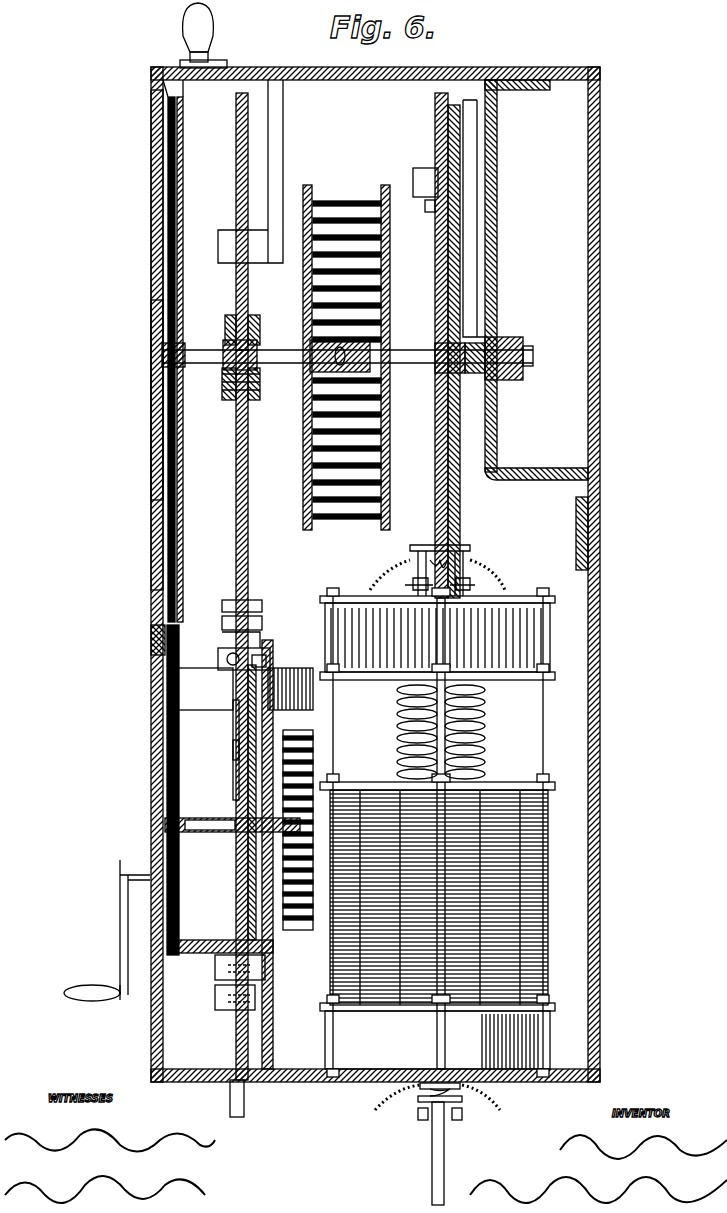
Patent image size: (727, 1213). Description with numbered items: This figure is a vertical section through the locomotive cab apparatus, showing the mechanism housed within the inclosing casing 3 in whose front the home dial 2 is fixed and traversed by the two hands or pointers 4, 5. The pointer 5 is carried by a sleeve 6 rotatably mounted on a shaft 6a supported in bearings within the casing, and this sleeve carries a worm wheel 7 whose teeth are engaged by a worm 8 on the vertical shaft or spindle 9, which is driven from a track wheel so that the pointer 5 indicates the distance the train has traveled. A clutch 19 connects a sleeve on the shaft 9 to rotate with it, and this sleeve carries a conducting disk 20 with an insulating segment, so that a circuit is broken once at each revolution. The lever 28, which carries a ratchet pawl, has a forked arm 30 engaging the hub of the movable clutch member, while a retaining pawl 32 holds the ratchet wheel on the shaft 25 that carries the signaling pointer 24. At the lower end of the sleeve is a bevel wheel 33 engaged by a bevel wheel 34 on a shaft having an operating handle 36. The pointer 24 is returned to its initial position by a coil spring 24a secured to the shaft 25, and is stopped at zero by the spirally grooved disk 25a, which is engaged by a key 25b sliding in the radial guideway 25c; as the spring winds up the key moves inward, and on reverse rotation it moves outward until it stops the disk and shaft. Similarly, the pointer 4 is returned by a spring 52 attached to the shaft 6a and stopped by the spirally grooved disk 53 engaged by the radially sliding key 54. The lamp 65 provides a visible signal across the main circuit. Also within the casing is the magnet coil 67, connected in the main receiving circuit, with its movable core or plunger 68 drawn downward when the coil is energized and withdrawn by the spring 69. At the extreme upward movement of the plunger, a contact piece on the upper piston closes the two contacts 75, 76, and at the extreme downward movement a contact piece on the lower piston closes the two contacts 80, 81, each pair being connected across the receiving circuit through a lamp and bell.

The home dial 2 is at (143, 400).
The inclosing casing 3 is at (598, 375).
The hand or pointer 4 is at (146, 340).
The hand or pointer 5 is at (182, 351).
The sleeve 6 is at (222, 336).
The shaft 6a is at (418, 360).
The worm wheel 7 is at (236, 287).
The worm 8 is at (226, 325).
The vertical shaft or spindle 9 is at (236, 435).
The clutch 19 is at (218, 652).
The disk 20 is at (205, 689).
The hand or pointer 24 is at (167, 740).
The coil spring 24a is at (313, 758).
The shaft 25 is at (210, 818).
The spirally grooved disk 25a is at (248, 762).
The key 25b is at (248, 738).
The radial guideway 25c is at (268, 740).
The lever 28 is at (262, 624).
The forked arm 30 is at (262, 607).
The retaining pawl 32 is at (262, 664).
The bevel wheel 33 is at (215, 965).
The bevel wheel 34 is at (131, 906).
The operating handle 36 is at (120, 948).
The spring 52 is at (352, 505).
The spirally grooved disk 53 is at (455, 485).
The radially sliding key 54 is at (470, 185).
The lamp 65 is at (210, 36).
The magnet coil 67 is at (538, 928).
The movable core or plunger 68 is at (475, 752).
The spring 69 is at (478, 722).
The contact 75 is at (410, 583).
The contact 76 is at (472, 583).
The contact 80 is at (412, 1100).
The contact 81 is at (465, 1100).